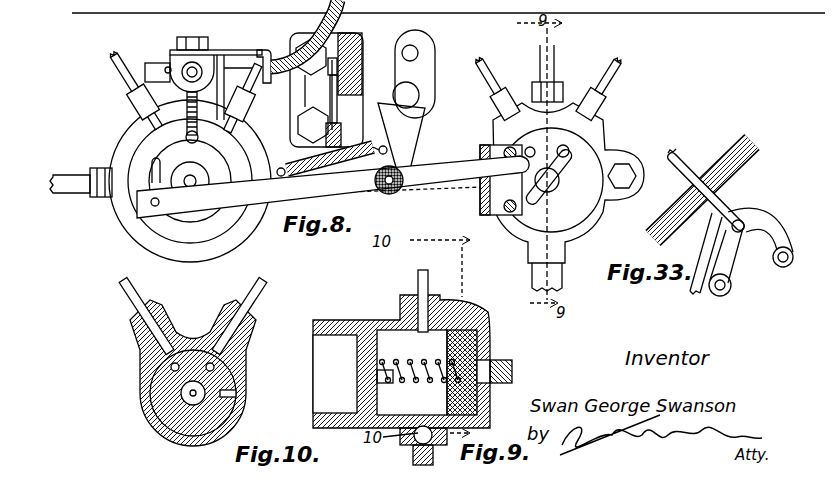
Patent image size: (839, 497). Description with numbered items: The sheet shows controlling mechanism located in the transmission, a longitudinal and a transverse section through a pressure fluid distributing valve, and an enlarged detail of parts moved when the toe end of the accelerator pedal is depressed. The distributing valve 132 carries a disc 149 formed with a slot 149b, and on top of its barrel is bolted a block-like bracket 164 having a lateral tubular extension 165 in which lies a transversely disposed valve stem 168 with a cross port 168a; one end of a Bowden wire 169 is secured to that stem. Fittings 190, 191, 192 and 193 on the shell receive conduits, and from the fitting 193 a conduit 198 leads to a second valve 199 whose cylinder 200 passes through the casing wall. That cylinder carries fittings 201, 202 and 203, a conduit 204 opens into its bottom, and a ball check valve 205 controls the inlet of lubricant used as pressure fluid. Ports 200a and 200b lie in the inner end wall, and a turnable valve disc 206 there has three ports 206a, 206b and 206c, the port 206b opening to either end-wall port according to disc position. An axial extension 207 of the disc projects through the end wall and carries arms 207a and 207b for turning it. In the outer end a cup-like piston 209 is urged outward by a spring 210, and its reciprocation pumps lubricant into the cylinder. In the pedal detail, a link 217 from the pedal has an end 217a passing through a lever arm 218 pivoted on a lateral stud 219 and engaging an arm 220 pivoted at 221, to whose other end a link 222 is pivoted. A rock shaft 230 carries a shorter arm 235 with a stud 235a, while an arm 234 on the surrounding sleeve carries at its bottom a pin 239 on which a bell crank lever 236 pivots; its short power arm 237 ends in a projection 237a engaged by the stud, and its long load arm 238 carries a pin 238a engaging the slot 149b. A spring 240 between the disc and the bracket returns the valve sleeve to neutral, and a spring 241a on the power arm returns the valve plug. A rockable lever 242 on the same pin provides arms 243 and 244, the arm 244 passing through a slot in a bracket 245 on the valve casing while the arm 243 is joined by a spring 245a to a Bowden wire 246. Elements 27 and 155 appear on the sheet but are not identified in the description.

In FIG. 8, the valve block 27 is at (355, 45).
In FIG. 8, the distributing valve 132 is at (112, 142).
In FIG. 8, the disc 149 is at (198, 224).
In FIG. 8, the slot 149b is at (150, 172).
In FIG. 8, the hub 155 is at (196, 177).
In FIG. 8, the block-like bracket 164 is at (208, 93).
In FIG. 8, the lateral tubular extension 165 is at (186, 66).
In FIG. 8, the valve stem 168 is at (158, 64).
In FIG. 8, the cross port 168a is at (180, 58).
In FIG. 8, the Bowden wire 169 is at (226, 72).
In FIG. 8, the fitting 190 is at (80, 183).
In FIG. 8, the fitting 191 is at (125, 63).
In FIG. 8, the fitting 192 is at (253, 80).
In FIG. 8, the fitting 193 is at (296, 170).
In FIG. 8, the conduit 198 is at (550, 52).
In FIG. 8, the valve 199 is at (604, 158).
In FIG. 10, the valve 199 is at (140, 421).
In FIG. 9, the valve 199 is at (490, 290).
In FIG. 9, the cylinder 200 is at (348, 320).
In FIG. 8, the port 200a is at (523, 150).
In FIG. 8, the port 200b is at (569, 147).
In FIG. 8, the fitting 201 is at (606, 108).
In FIG. 8, the fitting 202 is at (498, 104).
In FIG. 8, the fitting 203 is at (556, 85).
In FIG. 8, the conduit 204 is at (552, 277).
In FIG. 9, the conduit 204 is at (410, 458).
In FIG. 9, the ball check valve 205 is at (421, 437).
In FIG. 10, the valve disc 206 is at (160, 397).
In FIG. 9, the valve disc 206 is at (462, 342).
In FIG. 10, the port 206a is at (237, 394).
In FIG. 10, the port 206b is at (215, 367).
In FIG. 10, the port 206c is at (170, 367).
In FIG. 8, the axial extension 207 is at (559, 181).
In FIG. 9, the axial extension 207 is at (512, 370).
In FIG. 8, the arm 207a is at (556, 164).
In FIG. 8, the arm 207b is at (541, 202).
In FIG. 9, the cup-like piston 209 is at (378, 337).
In FIG. 9, the spring 210 is at (411, 381).
In FIG. 33, the link 217 is at (684, 172).
In FIG. 33, the link end 217a is at (743, 222).
In FIG. 33, the lever arm 218 is at (730, 262).
In FIG. 33, the lateral stud 219 is at (731, 289).
In FIG. 33, the arm 220 is at (762, 226).
In FIG. 33, the pivot 221 is at (776, 257).
In FIG. 33, the link 222 is at (713, 238).
In FIG. 8, the rock shaft 230 is at (417, 50).
In FIG. 8, the arm 234 is at (415, 125).
In FIG. 8, the shorter arm 235 is at (413, 72).
In FIG. 8, the stud 235a is at (414, 92).
In FIG. 8, the bell crank lever 236 is at (280, 210).
In FIG. 8, the power arm 237 is at (397, 142).
In FIG. 8, the projection 237a is at (420, 101).
In FIG. 8, the load arm 238 is at (183, 205).
In FIG. 8, the pin 238a is at (152, 205).
In FIG. 8, the pin 239 is at (391, 194).
In FIG. 8, the spring 240 is at (138, 110).
In FIG. 8, the spring 241a is at (303, 142).
In FIG. 8, the rockable lever 242 is at (437, 197).
In FIG. 8, the arm 243 is at (360, 188).
In FIG. 8, the arm 244 is at (452, 176).
In FIG. 8, the bracket 245 is at (497, 199).
In FIG. 8, the spring 245a is at (338, 123).
In FIG. 8, the Bowden wire 246 is at (335, 120).